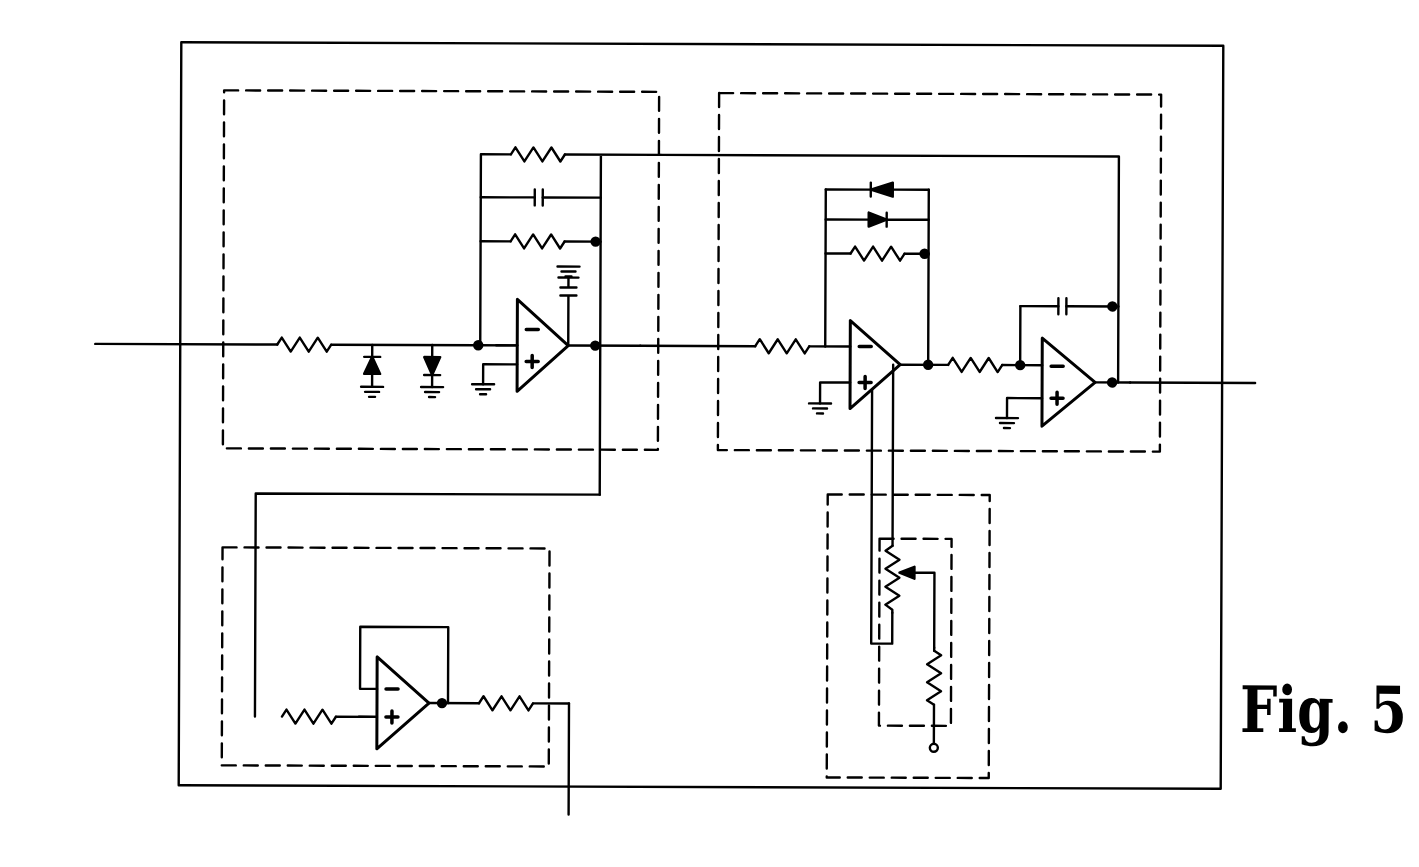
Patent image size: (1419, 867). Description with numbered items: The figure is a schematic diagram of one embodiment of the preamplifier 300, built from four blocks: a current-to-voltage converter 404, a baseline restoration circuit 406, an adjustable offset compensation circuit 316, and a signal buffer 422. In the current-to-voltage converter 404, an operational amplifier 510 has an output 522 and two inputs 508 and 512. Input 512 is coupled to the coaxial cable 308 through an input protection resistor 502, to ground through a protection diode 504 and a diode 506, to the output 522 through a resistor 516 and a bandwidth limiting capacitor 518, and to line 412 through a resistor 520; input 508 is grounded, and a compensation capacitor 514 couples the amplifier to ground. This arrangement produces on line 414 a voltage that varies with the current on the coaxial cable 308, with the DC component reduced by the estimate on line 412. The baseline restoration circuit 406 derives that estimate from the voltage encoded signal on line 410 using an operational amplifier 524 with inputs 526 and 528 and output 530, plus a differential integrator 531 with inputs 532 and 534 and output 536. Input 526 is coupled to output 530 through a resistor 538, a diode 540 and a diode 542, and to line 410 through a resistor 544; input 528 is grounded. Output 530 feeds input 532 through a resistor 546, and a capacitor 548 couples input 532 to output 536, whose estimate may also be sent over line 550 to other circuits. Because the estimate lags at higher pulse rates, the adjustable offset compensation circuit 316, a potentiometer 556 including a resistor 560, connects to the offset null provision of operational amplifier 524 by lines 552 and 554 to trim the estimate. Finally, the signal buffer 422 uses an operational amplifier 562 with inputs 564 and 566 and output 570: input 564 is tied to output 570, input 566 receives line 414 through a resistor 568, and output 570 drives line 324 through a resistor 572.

The preamplifier 300 is at (1222, 550).
The current-to-voltage converter 404 is at (398, 92).
The baseline restoration circuit 406 is at (956, 92).
The signal buffer 422 is at (464, 548).
The adjustable offset compensation circuit 316 is at (992, 564).
The coaxial cable 308 is at (190, 344).
The input protection resistor 502 is at (306, 339).
The protection diode 504 is at (366, 378).
The diode 506 is at (424, 368).
The input 508 is at (515, 390).
The operational amplifier 510 is at (550, 374).
The input 512 is at (515, 342).
The compensation capacitor 514 is at (559, 296).
The resistor 516 is at (532, 232).
The bandwidth limiting capacitor 518 is at (550, 188).
The resistor 520 is at (536, 148).
The output 522 is at (574, 340).
The line 412 is at (676, 150).
The line 410 is at (674, 344).
The line 414 is at (523, 492).
The resistor 544 is at (765, 342).
The input 526 is at (832, 330).
The operational amplifier 524 is at (878, 333).
The input 528 is at (848, 410).
The output 530 is at (918, 378).
The resistor 538 is at (874, 246).
The diode 540 is at (874, 214).
The diode 542 is at (882, 182).
The resistor 546 is at (958, 348).
The input 532 is at (1022, 332).
The capacitor 548 is at (1063, 290).
The differential integrator 531 is at (1080, 352).
The input 534 is at (1048, 412).
The output 536 is at (1106, 385).
The line 550 is at (1187, 386).
The line 552 is at (868, 470).
The line 554 is at (898, 470).
The potentiometer 556 is at (930, 534).
The resistor 560 is at (944, 658).
The resistor 568 is at (296, 706).
The operational amplifier 562 is at (410, 670).
The input 564 is at (361, 668).
The input 566 is at (371, 724).
The output 570 is at (438, 714).
The resistor 572 is at (504, 690).
The line 324 is at (570, 806).